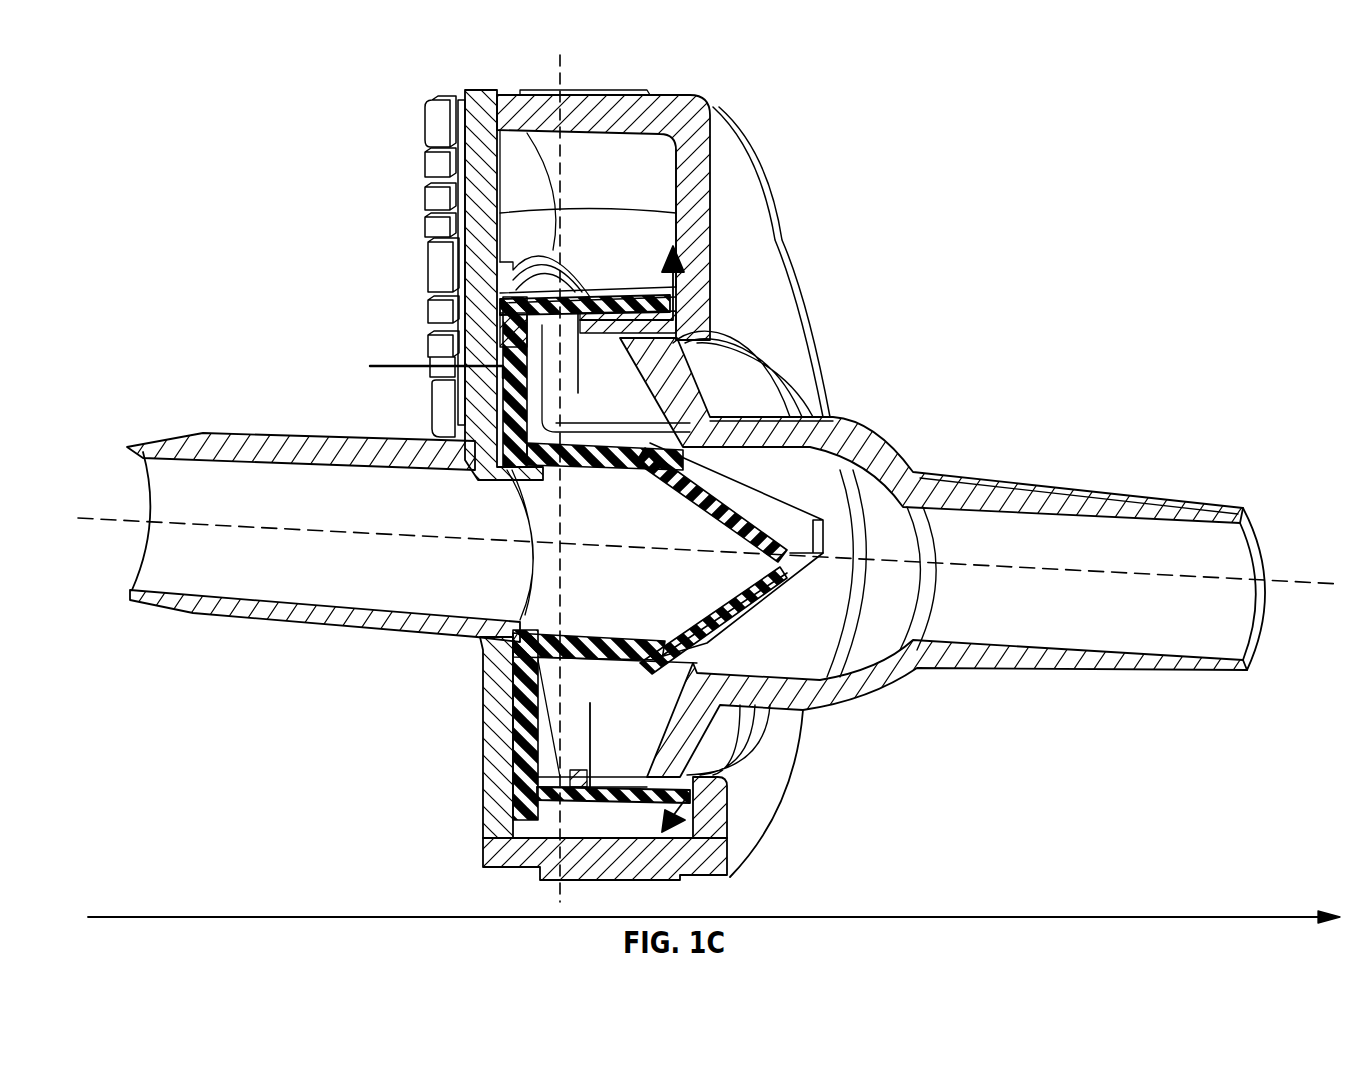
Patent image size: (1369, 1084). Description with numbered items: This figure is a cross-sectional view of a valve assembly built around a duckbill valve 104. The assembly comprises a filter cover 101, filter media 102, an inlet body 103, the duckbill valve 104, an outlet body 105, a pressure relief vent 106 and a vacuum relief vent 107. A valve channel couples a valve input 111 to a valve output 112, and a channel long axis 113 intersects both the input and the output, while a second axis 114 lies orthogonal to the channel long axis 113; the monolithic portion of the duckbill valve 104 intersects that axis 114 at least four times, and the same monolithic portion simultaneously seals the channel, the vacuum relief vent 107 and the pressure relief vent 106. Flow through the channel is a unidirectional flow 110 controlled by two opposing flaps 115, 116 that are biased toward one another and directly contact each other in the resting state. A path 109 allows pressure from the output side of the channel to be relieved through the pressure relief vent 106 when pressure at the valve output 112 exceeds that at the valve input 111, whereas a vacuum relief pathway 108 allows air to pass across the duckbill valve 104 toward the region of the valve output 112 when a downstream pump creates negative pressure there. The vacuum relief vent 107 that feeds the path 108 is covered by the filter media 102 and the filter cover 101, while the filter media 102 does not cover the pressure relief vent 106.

The filter cover 101 is at (440, 275).
The filter media 102 is at (453, 150).
The inlet body 103 is at (478, 110).
The duckbill valve 104 is at (817, 550).
The outlet body 105 is at (683, 118).
The pressure relief vent 106 is at (720, 788).
The vacuum relief vent 107 is at (450, 350).
The vacuum relief pathway 108 is at (388, 368).
The pressure relief pathway 109 is at (683, 273).
The unidirectional flow 110 is at (136, 916).
The valve input 111 is at (240, 583).
The valve output 112 is at (1190, 537).
The channel long axis 113 is at (103, 517).
The axis 114 is at (563, 78).
The flap 115 is at (753, 490).
The flap 116 is at (743, 607).